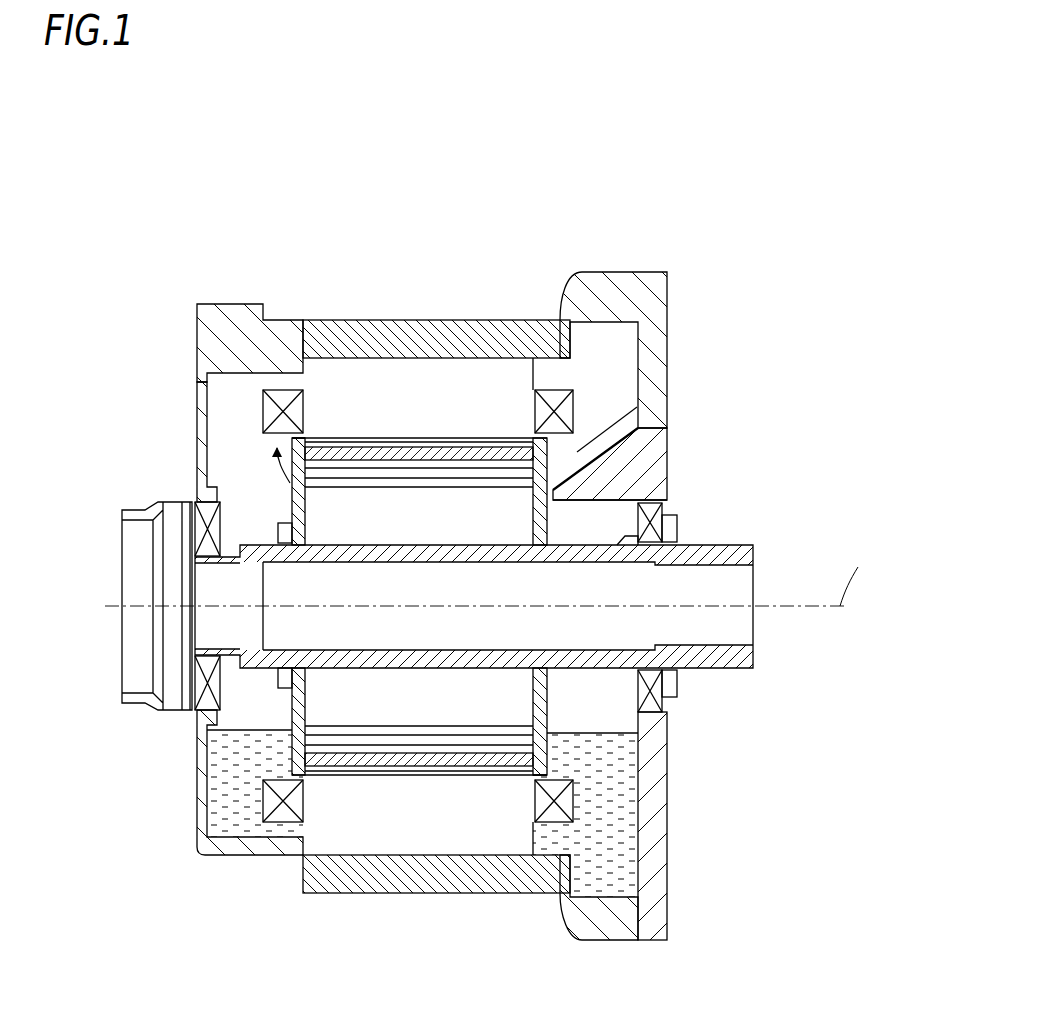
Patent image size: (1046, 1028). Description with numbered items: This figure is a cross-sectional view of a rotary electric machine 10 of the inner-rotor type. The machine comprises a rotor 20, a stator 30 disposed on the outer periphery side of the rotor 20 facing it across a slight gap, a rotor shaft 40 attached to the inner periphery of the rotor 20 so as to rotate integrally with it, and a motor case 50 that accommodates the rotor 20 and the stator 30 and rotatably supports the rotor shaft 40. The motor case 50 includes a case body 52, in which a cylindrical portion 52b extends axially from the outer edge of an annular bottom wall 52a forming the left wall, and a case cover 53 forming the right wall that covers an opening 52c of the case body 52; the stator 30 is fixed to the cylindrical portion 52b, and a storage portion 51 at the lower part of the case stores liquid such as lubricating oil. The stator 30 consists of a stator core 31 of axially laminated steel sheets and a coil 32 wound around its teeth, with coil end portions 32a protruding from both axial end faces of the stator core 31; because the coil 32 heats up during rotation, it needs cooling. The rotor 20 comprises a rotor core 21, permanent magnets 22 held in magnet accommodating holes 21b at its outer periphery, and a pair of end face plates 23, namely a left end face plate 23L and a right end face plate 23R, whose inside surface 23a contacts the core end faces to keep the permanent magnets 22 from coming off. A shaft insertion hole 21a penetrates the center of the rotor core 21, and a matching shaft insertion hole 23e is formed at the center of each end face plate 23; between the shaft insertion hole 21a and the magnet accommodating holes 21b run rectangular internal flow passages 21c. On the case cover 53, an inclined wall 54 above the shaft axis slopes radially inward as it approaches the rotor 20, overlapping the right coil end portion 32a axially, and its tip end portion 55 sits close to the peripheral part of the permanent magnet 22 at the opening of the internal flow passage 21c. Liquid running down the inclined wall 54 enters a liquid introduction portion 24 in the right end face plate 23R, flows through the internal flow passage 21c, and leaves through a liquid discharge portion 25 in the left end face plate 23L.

The rotary electric machine 10 is at (489, 131).
The rotor 20 is at (300, 705).
The rotor core 21 is at (490, 458).
The shaft insertion hole 21a is at (457, 776).
The magnet accommodating hole 21b is at (412, 775).
The internal flow passage 21c is at (357, 470).
The permanent magnet 22 is at (388, 455).
The end face plate 23 is at (435, 622).
The left end face plate 23L is at (290, 495).
The right end face plate 23R is at (646, 729).
The inside surface 23a is at (325, 440).
The shaft insertion hole 23e is at (262, 703).
The liquid introduction portion 24 is at (667, 399).
The liquid discharge portion 25 is at (280, 483).
The stator 30 is at (578, 385).
The stator core 31 is at (440, 373).
The coil 32 is at (397, 522).
The coil end portion 32a is at (280, 390).
The rotor shaft 40 is at (753, 553).
The motor case 50 is at (196, 824).
The storage portion 51 is at (245, 815).
The case body 52 is at (188, 288).
The annular bottom wall 52a is at (197, 397).
The cylindrical portion 52b is at (197, 340).
The opening 52c is at (648, 300).
The case cover 53 is at (655, 369).
The inclined wall 54 is at (667, 432).
The tip end portion 55 is at (615, 482).